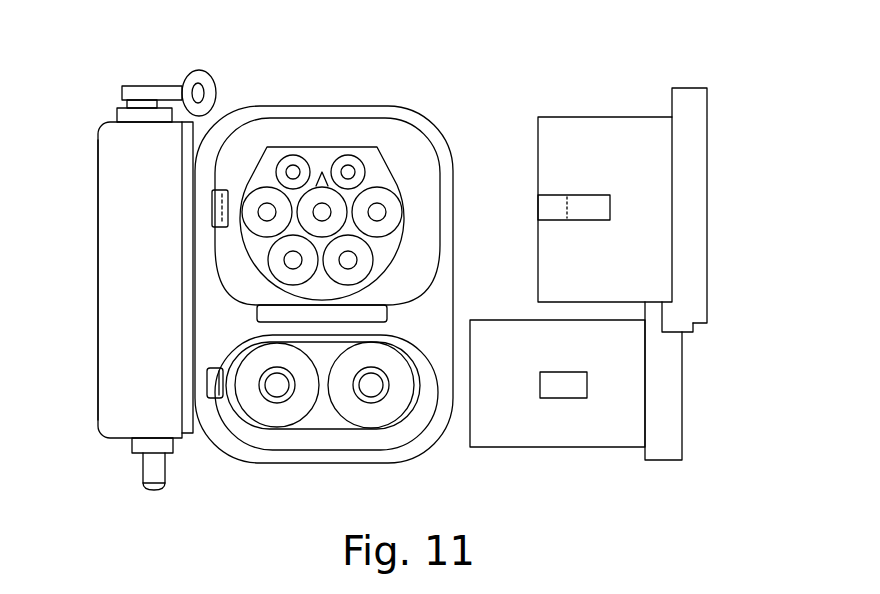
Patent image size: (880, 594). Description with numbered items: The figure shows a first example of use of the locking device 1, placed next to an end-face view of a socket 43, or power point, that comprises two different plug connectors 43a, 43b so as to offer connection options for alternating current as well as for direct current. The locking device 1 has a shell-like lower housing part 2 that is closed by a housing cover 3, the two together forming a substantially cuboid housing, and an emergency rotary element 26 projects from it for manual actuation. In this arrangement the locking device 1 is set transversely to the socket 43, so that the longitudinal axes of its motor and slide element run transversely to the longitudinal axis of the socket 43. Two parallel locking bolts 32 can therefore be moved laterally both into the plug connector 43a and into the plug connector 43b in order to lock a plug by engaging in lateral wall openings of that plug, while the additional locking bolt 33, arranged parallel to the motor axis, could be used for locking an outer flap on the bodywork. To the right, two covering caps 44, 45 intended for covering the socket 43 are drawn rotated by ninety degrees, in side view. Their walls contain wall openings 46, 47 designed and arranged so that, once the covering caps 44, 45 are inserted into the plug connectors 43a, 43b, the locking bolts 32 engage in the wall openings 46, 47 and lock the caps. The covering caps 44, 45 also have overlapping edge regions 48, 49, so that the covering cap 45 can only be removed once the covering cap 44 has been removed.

The locking device 1 is at (117, 140).
The lower housing part 2 is at (117, 261).
The housing cover 3 is at (192, 433).
The emergency rotary element 26 is at (160, 92).
The locking bolt 32 is at (222, 197).
The additional locking bolt 33 is at (153, 468).
The socket 43 is at (355, 115).
The plug connector 43a is at (395, 147).
The plug connector 43b is at (395, 432).
The covering cap 44 is at (600, 135).
The covering cap 45 is at (608, 432).
The wall opening 46 is at (582, 207).
The wall opening 47 is at (560, 385).
The overlapping edge region 48 is at (693, 317).
The overlapping edge region 49 is at (653, 313).